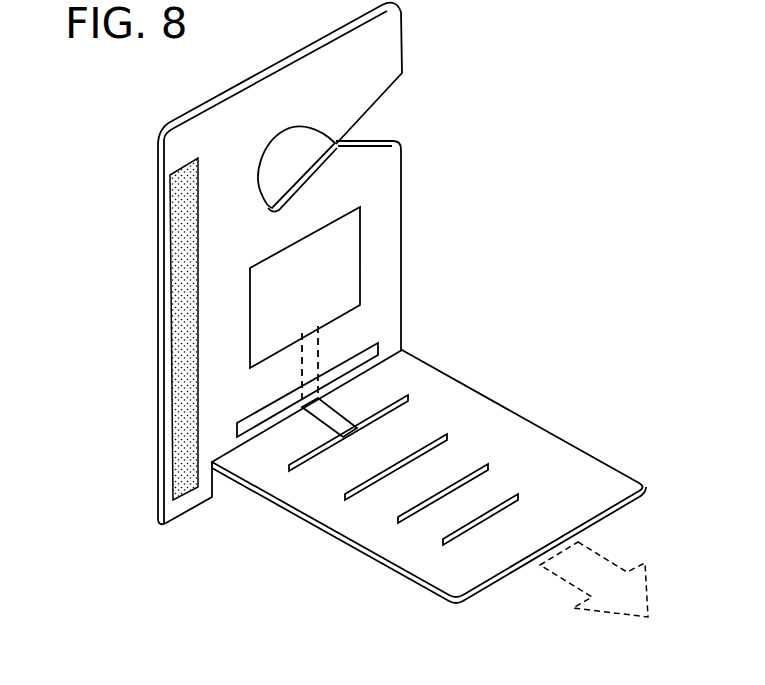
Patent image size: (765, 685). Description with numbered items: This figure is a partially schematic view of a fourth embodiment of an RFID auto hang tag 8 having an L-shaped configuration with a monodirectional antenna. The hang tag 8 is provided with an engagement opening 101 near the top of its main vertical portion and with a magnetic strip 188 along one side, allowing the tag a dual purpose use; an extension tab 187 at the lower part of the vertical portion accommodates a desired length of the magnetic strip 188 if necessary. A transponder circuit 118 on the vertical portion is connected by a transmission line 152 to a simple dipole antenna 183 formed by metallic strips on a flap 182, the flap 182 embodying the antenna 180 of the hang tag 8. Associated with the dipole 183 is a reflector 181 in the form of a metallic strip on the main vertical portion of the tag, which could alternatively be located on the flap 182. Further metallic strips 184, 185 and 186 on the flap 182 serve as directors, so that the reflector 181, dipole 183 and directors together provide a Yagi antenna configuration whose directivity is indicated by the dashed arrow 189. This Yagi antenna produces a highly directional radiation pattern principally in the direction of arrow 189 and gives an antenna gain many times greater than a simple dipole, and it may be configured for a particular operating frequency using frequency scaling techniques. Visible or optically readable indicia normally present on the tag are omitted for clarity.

The hang tag 8 is at (141, 151).
The engagement opening 101 is at (262, 170).
The transponder circuit 118 is at (307, 236).
The transmission line 152 is at (318, 350).
The antenna 180 is at (441, 399).
The reflector 181 is at (260, 410).
The flap 182 is at (572, 440).
The dipole antenna 183 is at (290, 464).
The metallic strip 184 is at (351, 486).
The metallic strip 185 is at (408, 502).
The metallic strip 186 is at (455, 528).
The extension tab 187 is at (187, 510).
The magnetic strip 188 is at (199, 218).
The arrow 189 is at (633, 562).